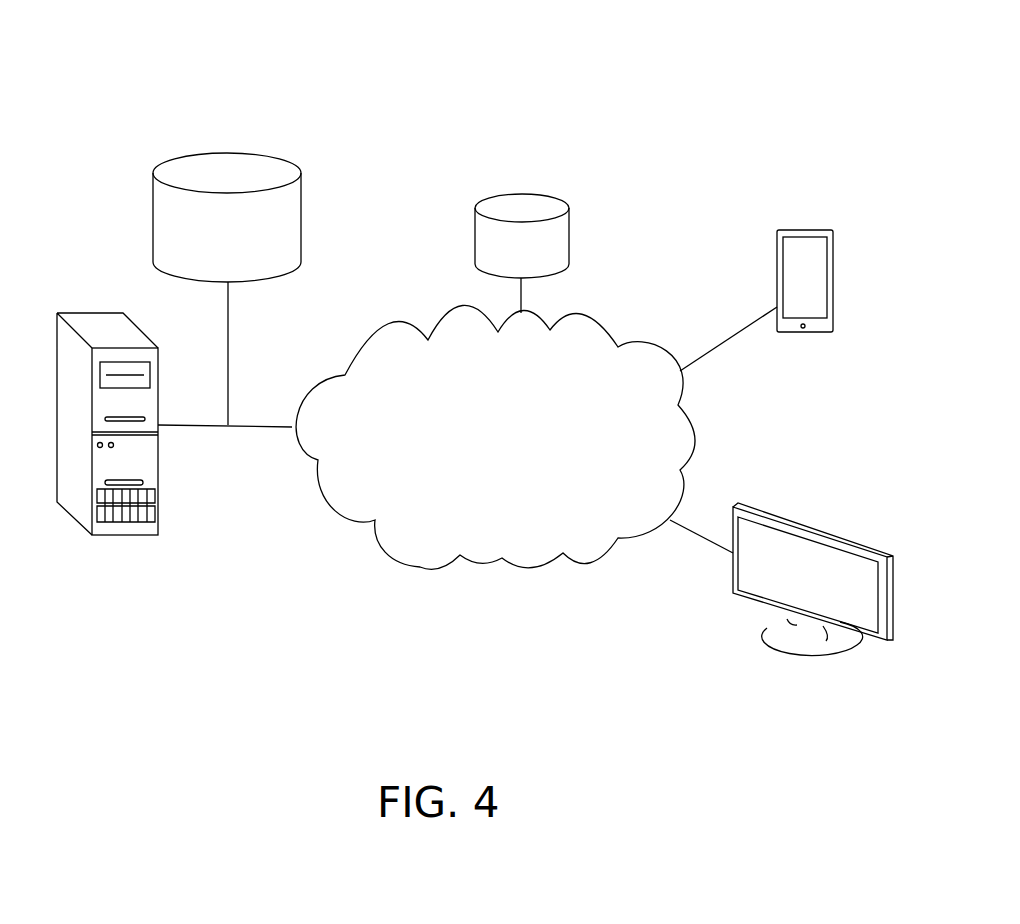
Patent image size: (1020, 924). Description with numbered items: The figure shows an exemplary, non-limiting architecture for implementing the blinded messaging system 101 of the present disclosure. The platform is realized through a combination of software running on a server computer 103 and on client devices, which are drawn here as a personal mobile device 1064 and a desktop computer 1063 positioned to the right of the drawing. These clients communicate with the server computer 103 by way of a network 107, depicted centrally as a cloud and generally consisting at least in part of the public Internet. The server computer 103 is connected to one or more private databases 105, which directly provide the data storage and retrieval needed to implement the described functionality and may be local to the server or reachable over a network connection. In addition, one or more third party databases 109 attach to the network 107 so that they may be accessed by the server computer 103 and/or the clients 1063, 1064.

The system 101 is at (713, 72).
The server computer 103 is at (118, 537).
The private database 105 is at (263, 170).
The network 107 is at (420, 567).
The third party database 109 is at (528, 207).
The display device 1063 is at (817, 527).
The mobile device 1064 is at (805, 230).